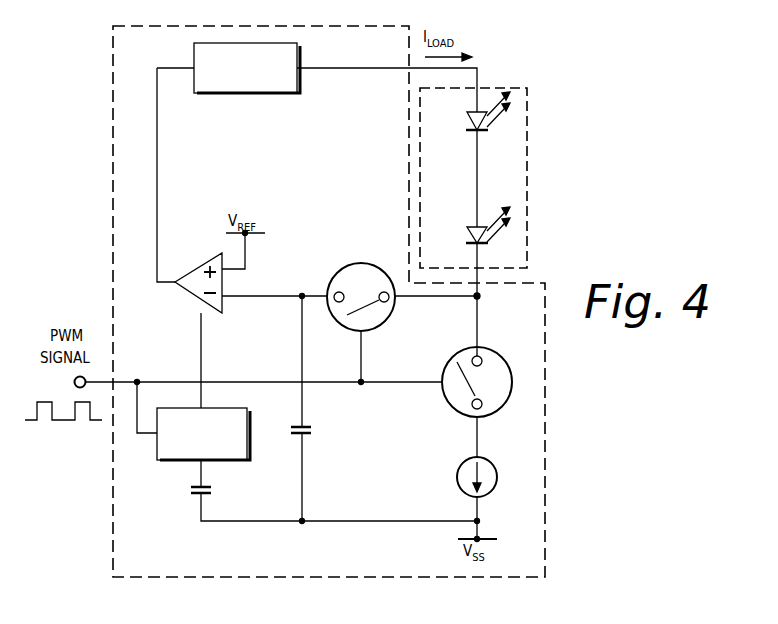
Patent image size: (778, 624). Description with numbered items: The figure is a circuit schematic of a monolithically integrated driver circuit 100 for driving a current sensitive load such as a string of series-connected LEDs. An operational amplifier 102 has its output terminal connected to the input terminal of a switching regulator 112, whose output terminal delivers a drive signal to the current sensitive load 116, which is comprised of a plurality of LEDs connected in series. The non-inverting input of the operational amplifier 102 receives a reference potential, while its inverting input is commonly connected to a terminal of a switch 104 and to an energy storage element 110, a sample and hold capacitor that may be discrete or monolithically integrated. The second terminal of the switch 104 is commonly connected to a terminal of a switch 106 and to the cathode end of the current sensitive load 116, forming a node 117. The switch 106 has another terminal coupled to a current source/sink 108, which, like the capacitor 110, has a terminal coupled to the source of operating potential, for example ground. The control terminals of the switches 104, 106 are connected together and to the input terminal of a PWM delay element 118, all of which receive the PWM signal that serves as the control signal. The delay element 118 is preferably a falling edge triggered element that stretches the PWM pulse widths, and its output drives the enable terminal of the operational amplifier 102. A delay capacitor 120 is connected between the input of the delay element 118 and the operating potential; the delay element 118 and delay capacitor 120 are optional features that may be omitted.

The driver circuit 100 is at (113, 215).
The operational amplifier 102 is at (204, 264).
The switch 104 is at (348, 265).
The switch 106 is at (445, 407).
The current source/sink 108 is at (457, 483).
The energy storage element 110 is at (313, 428).
The switching regulator 112 is at (240, 94).
The current sensitive load 116 is at (499, 178).
The node 117 is at (480, 299).
The PWM delay element 118 is at (250, 432).
The delay capacitor 120 is at (212, 490).